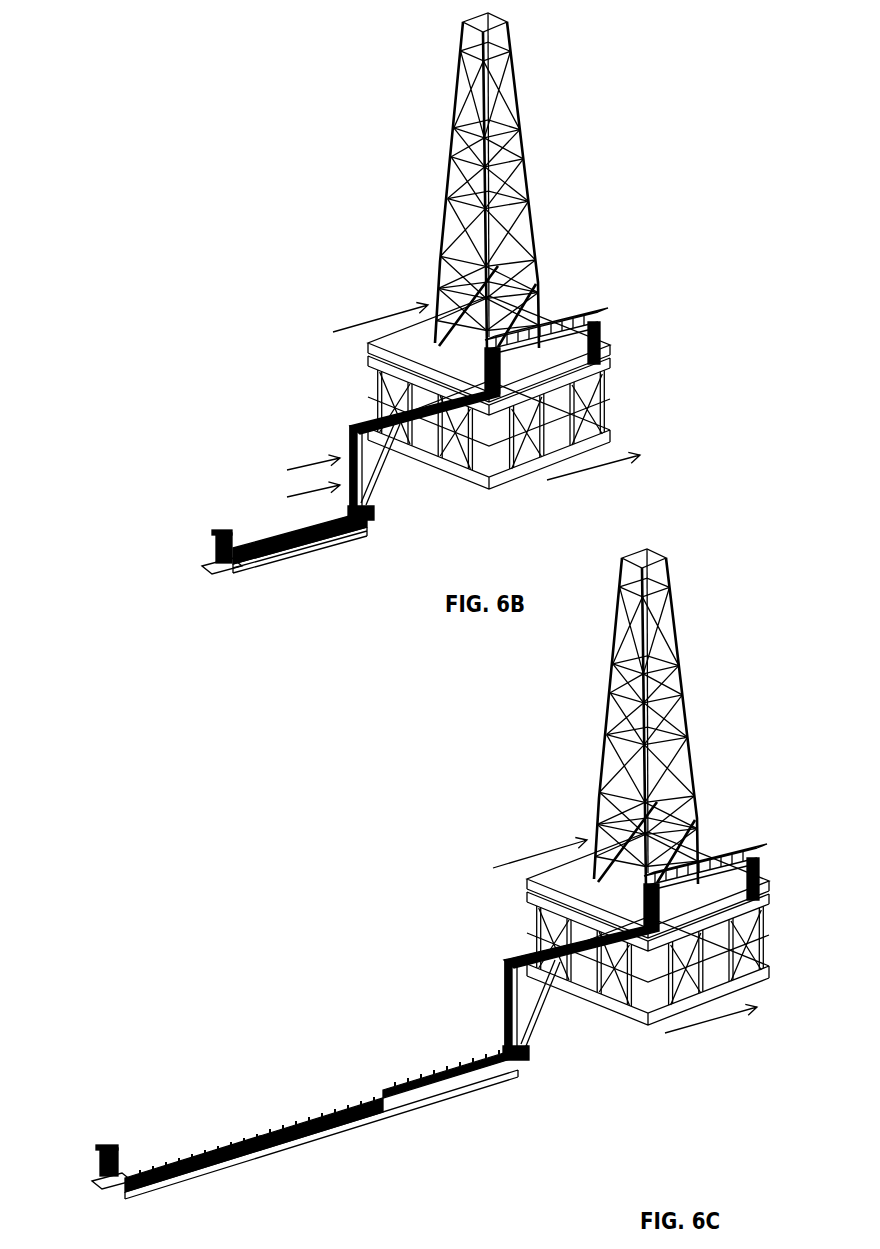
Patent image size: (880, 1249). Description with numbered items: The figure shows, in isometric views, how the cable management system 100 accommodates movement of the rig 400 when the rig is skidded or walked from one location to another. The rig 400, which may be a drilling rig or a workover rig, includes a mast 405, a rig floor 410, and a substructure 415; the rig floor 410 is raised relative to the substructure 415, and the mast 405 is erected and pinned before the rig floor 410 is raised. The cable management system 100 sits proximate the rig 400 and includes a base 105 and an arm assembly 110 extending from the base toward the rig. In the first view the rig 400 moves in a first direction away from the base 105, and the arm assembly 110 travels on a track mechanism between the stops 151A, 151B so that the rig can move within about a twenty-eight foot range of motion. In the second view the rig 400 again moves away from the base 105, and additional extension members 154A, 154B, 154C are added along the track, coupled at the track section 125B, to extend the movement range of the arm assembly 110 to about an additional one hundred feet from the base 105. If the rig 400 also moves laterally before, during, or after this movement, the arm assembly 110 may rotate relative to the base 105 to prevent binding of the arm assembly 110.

In FIG. 6B, the rig 400 is at (489, 255).
In FIG. 6C, the rig 400 is at (636, 791).
In FIG. 6B, the mast 405 is at (520, 126).
In FIG. 6C, the mast 405 is at (680, 643).
In FIG. 6B, the rig floor 410 is at (556, 312).
In FIG. 6C, the rig floor 410 is at (716, 853).
In FIG. 6B, the substructure 415 is at (616, 437).
In FIG. 6C, the substructure 415 is at (777, 973).
In FIG. 6B, the cable management system 100 is at (301, 511).
In FIG. 6C, the cable management system 100 is at (335, 1077).
In FIG. 6B, the base 105 is at (277, 568).
In FIG. 6C, the base 105 is at (142, 1188).
In FIG. 6B, the arm assembly 110 is at (343, 436).
In FIG. 6C, the arm assembly 110 is at (500, 1002).
In FIG. 6B, the stop 151A is at (277, 531).
In FIG. 6B, the stop 151B is at (371, 504).
In FIG. 6C, the pivot joint 125B is at (508, 1075).
In FIG. 6C, the extension member 154A is at (345, 1130).
In FIG. 6C, the extension member 154B is at (393, 1113).
In FIG. 6C, the extension member 154C is at (460, 1088).